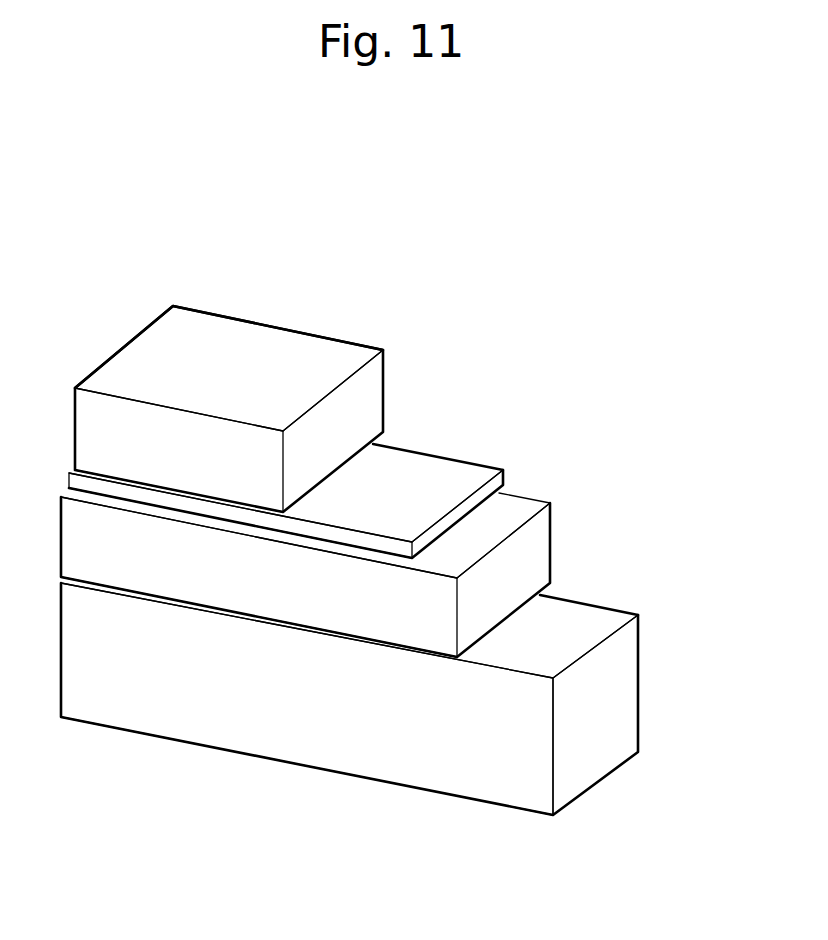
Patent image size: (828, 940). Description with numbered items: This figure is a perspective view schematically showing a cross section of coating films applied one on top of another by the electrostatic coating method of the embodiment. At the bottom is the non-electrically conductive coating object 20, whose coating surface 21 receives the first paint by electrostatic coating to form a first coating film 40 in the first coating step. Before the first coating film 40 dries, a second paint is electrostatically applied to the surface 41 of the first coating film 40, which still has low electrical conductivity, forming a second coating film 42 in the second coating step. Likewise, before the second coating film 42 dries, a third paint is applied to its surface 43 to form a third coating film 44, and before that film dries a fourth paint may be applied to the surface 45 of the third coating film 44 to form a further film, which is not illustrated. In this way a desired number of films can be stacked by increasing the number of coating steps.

The non-electrically conductive coating object 20 is at (597, 695).
The coating surface 21 is at (563, 637).
The first coating film 40 is at (498, 587).
The surface of the first coating film 41 is at (495, 535).
The second coating film 42 is at (488, 490).
The surface of the second coating film 43 is at (435, 488).
The third coating film 44 is at (350, 410).
The surface of the third coating film 45 is at (318, 358).